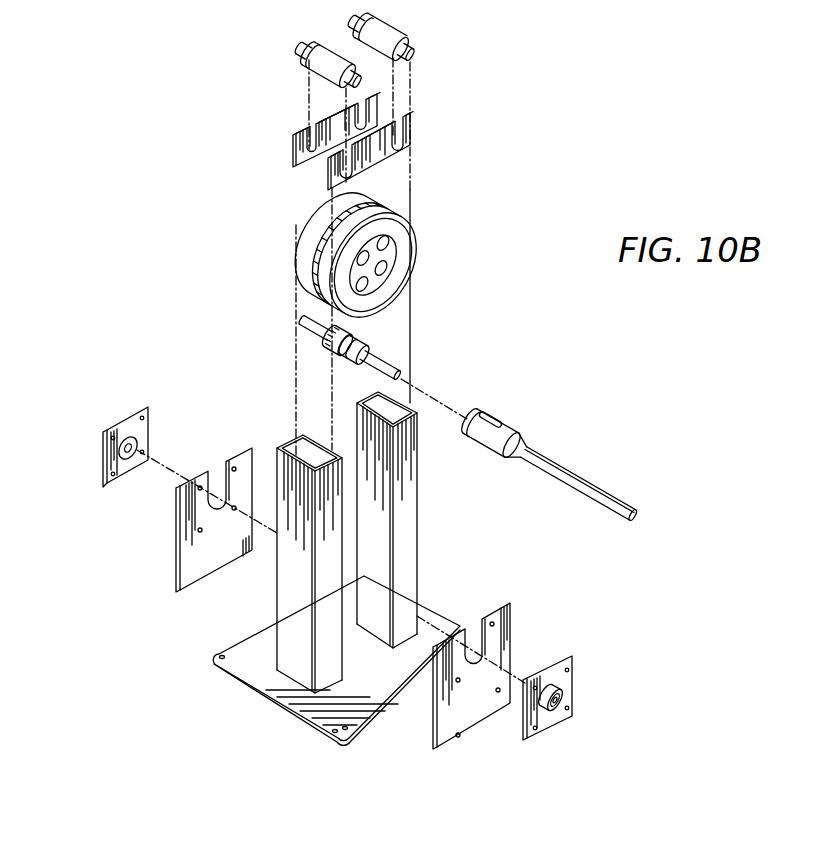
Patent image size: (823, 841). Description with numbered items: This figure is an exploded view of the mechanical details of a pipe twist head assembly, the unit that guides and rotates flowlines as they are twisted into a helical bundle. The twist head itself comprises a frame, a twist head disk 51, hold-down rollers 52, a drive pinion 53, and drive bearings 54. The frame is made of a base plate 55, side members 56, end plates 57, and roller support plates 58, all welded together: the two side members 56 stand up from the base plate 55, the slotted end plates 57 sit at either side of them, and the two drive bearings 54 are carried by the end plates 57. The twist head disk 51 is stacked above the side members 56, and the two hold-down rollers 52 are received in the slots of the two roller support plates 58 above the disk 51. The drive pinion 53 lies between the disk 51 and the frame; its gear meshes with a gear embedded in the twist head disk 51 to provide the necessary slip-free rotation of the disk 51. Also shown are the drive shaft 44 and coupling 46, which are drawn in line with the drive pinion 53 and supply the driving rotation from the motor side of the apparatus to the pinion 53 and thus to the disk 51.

The drive shaft 44 is at (597, 484).
The coupling 46 is at (506, 421).
The twist head disk 51 is at (410, 228).
The hold-down rollers 52 is at (346, 34).
The drive pinion 53 is at (368, 334).
The drive bearings 54 is at (100, 450).
The base plate 55 is at (245, 690).
The side members 56 is at (421, 534).
The end plates 57 is at (173, 552).
The roller support plates 58 is at (326, 182).